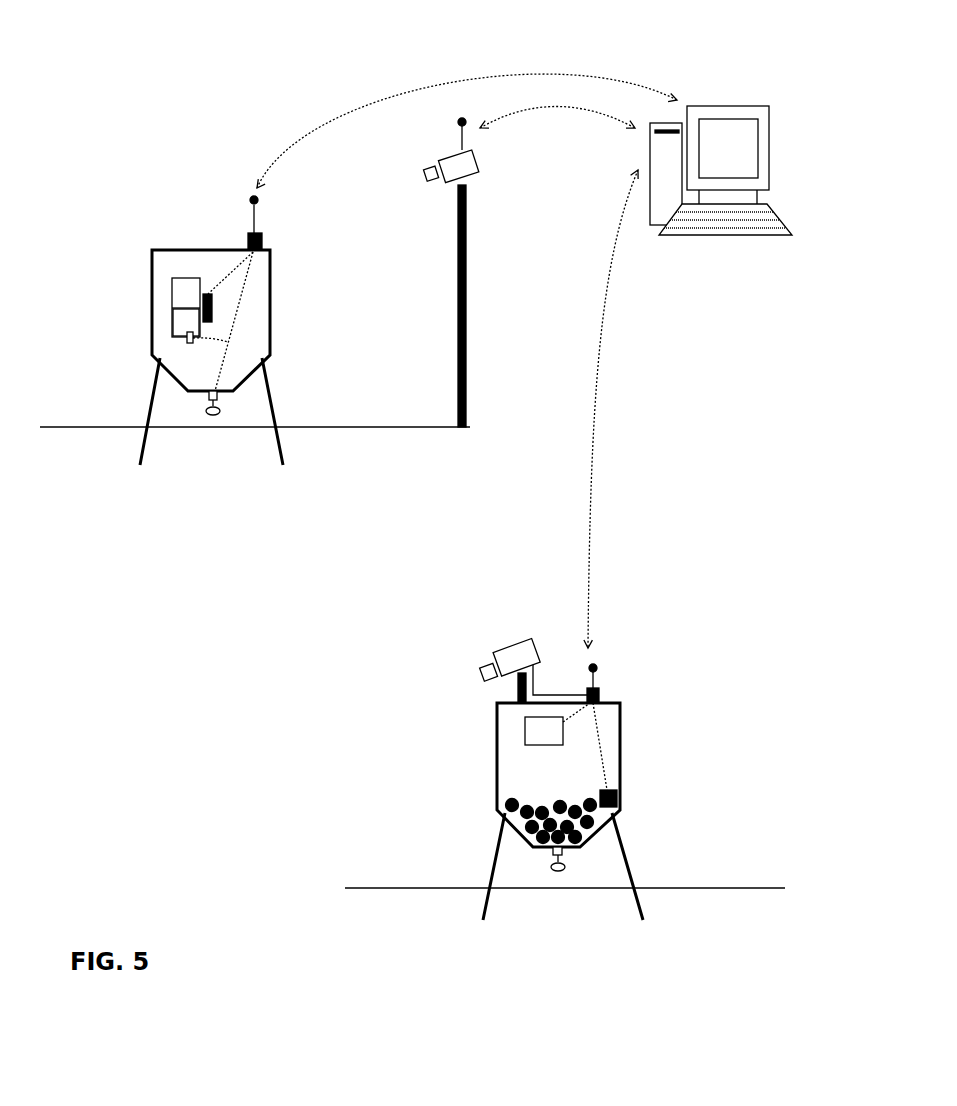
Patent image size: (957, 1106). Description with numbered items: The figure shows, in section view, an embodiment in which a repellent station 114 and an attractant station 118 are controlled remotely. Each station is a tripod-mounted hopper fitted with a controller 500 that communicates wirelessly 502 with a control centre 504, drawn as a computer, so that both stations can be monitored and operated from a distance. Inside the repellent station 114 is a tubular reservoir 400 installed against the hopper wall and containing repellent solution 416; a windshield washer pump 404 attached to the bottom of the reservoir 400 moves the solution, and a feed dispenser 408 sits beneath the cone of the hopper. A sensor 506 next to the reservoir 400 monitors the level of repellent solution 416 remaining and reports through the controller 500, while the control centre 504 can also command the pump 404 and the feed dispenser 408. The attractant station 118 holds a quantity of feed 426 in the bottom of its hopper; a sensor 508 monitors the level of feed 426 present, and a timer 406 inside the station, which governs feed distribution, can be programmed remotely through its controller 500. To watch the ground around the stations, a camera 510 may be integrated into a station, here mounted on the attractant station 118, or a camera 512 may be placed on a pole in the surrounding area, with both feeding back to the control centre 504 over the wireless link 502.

The repellent station 114 is at (150, 332).
The attractant station 118 is at (497, 767).
The tubular reservoir 400 is at (185, 278).
The windshield washer pump 404 is at (187, 343).
The timer 406 is at (525, 730).
The feed dispenser 408 is at (237, 388).
The repellent solution 416 is at (180, 318).
The feed 426 is at (523, 822).
The controller 500 is at (262, 240).
The wireless communication 502 is at (525, 108).
The control centre 504 is at (719, 235).
The sensor 506 is at (213, 304).
The sensor 508 is at (617, 798).
The camera integrated into a station 510 is at (517, 647).
The camera placed in the surrounding area 512 is at (477, 175).